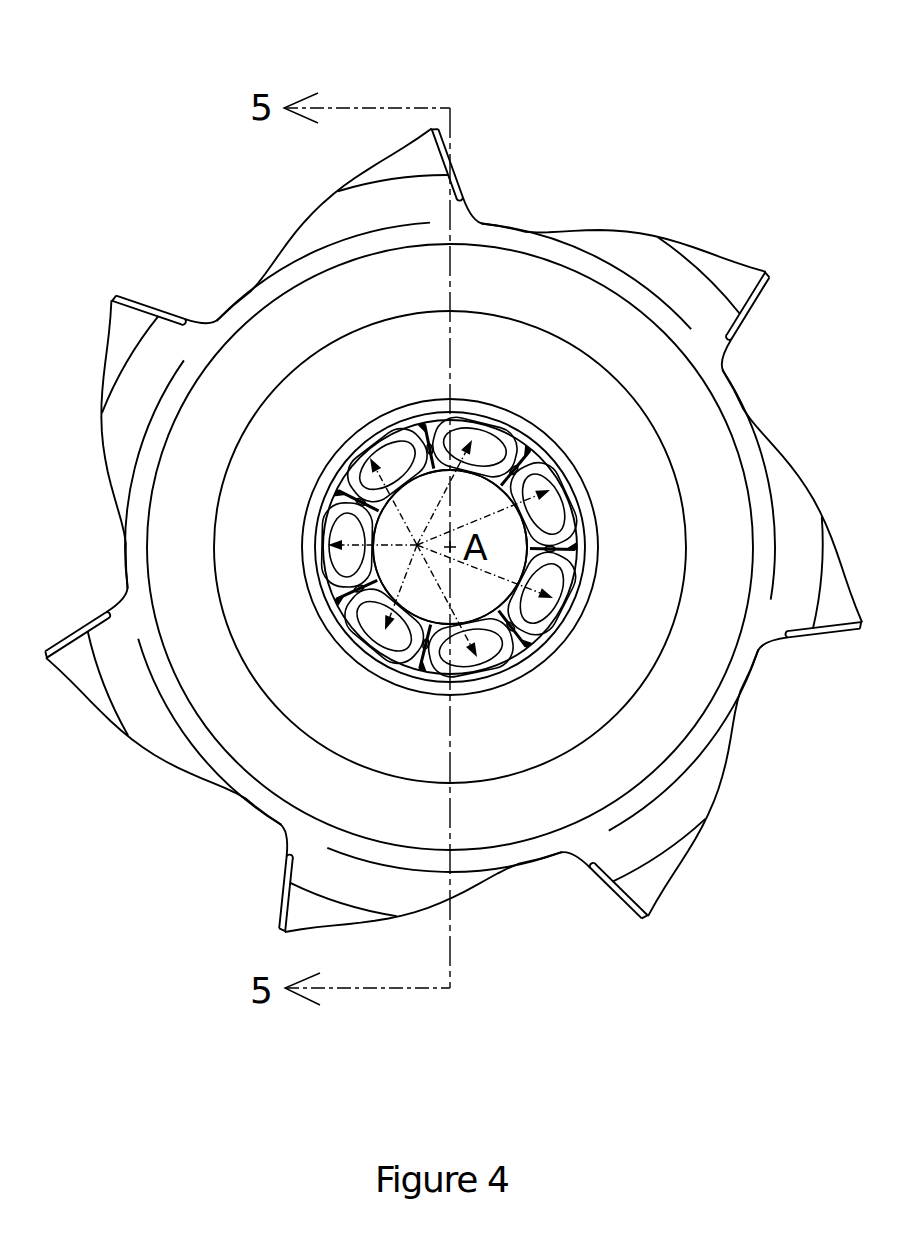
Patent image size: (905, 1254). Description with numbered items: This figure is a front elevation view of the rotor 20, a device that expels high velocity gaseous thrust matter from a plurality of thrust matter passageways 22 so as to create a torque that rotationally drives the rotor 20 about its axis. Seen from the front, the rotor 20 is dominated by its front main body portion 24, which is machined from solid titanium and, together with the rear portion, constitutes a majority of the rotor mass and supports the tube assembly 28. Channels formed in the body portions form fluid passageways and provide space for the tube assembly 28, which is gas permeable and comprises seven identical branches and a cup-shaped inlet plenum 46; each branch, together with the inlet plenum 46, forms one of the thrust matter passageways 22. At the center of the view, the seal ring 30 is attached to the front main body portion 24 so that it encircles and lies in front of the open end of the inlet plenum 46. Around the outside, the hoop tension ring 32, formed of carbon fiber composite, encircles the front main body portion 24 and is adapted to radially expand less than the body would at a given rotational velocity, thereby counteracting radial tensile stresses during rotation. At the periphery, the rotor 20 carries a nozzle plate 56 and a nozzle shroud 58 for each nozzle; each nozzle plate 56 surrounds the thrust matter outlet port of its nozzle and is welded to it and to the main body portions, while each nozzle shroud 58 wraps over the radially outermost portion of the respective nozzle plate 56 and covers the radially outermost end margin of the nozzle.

The rotor 20 is at (641, 98).
The thrust matter passageways 22 is at (347, 603).
The front main body portion 24 is at (147, 473).
The tube assembly 28 is at (510, 540).
The seal ring 30 is at (400, 688).
The hoop tension ring 32 is at (178, 552).
The inlet plenum 46 is at (510, 540).
The nozzle plate 56 is at (458, 188).
The nozzle shroud 58 is at (413, 158).